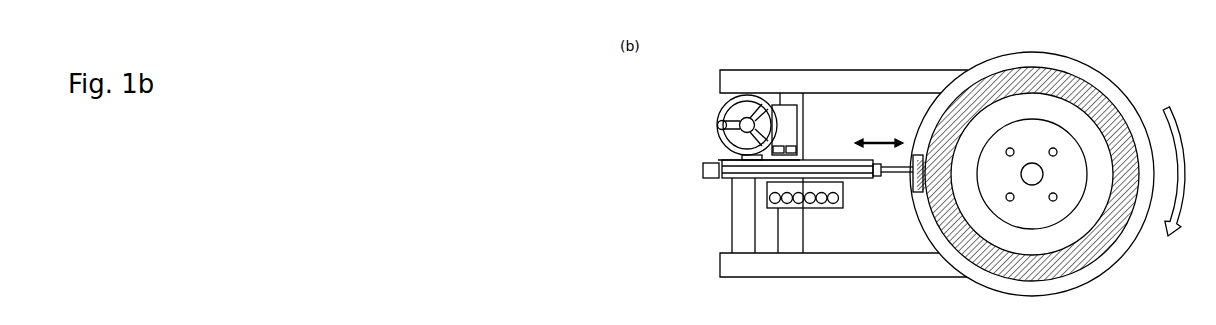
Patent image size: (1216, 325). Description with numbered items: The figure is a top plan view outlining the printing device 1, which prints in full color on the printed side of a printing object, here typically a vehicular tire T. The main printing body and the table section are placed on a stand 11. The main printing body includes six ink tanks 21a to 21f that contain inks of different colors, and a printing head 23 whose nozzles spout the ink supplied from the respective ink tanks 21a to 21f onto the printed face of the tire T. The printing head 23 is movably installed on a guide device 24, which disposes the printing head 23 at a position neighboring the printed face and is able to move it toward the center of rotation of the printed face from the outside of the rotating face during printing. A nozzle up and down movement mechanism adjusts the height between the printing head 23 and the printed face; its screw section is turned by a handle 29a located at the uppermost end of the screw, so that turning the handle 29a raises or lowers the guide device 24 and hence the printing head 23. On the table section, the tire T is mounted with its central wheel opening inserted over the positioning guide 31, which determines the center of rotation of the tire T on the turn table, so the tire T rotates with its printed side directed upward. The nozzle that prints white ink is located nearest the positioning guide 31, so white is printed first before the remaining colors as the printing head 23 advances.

The printing device 1 is at (817, 151).
The stand 11 is at (780, 79).
The handle 29a is at (720, 124).
The guide device 24 is at (822, 159).
The printing head 23 is at (915, 157).
The ink tank 21a is at (786, 199).
The ink tank 21f is at (770, 198).
The vehicular tire T is at (1047, 163).
The positioning guide 31 is at (1036, 178).